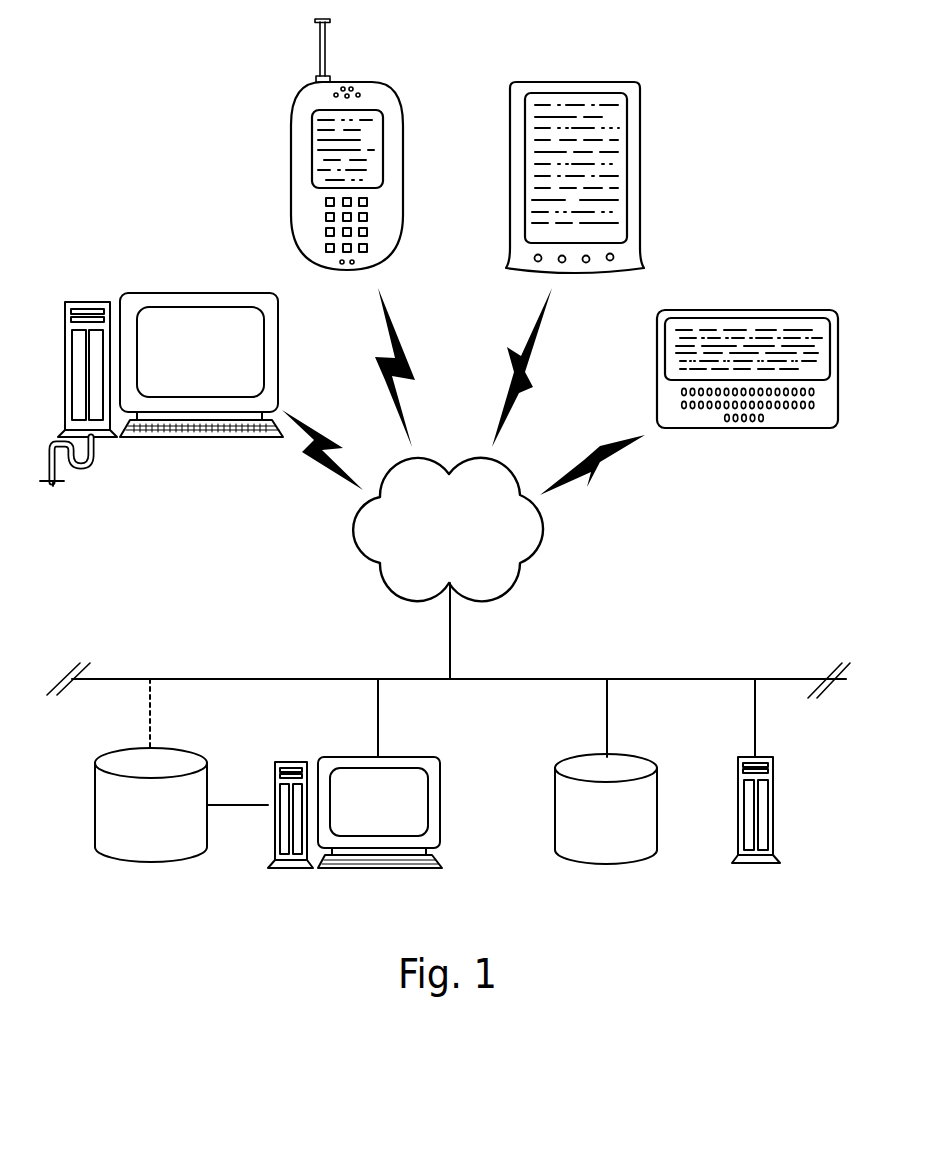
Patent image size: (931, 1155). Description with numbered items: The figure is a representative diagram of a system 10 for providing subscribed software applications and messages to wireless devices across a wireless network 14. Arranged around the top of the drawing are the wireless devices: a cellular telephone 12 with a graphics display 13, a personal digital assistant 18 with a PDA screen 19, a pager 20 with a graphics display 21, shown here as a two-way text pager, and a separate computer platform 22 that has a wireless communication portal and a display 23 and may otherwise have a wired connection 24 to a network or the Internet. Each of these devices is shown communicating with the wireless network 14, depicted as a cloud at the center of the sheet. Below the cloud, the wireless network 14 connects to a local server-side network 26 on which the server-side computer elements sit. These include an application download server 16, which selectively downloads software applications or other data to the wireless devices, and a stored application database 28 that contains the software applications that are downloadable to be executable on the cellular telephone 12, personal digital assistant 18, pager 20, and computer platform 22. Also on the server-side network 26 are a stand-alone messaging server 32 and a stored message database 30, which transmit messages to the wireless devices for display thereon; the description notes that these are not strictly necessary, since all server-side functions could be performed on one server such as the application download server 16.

The system 10 is at (752, 152).
The cellular telephone 12 is at (389, 82).
The graphics display 13 is at (305, 153).
The wireless network 14 is at (543, 530).
The application download server 16 is at (356, 757).
The personal digital assistant 18 is at (578, 82).
The PDA screen 19 is at (520, 153).
The pager 20 is at (778, 430).
The graphics display 21 is at (745, 322).
The computer platform 22 is at (191, 293).
The display 23 is at (162, 312).
The wired connection 24 is at (103, 473).
The local server-side network 26 is at (650, 679).
The stored application database 28 is at (95, 804).
The stored message database 30 is at (555, 808).
The messaging server 32 is at (773, 788).